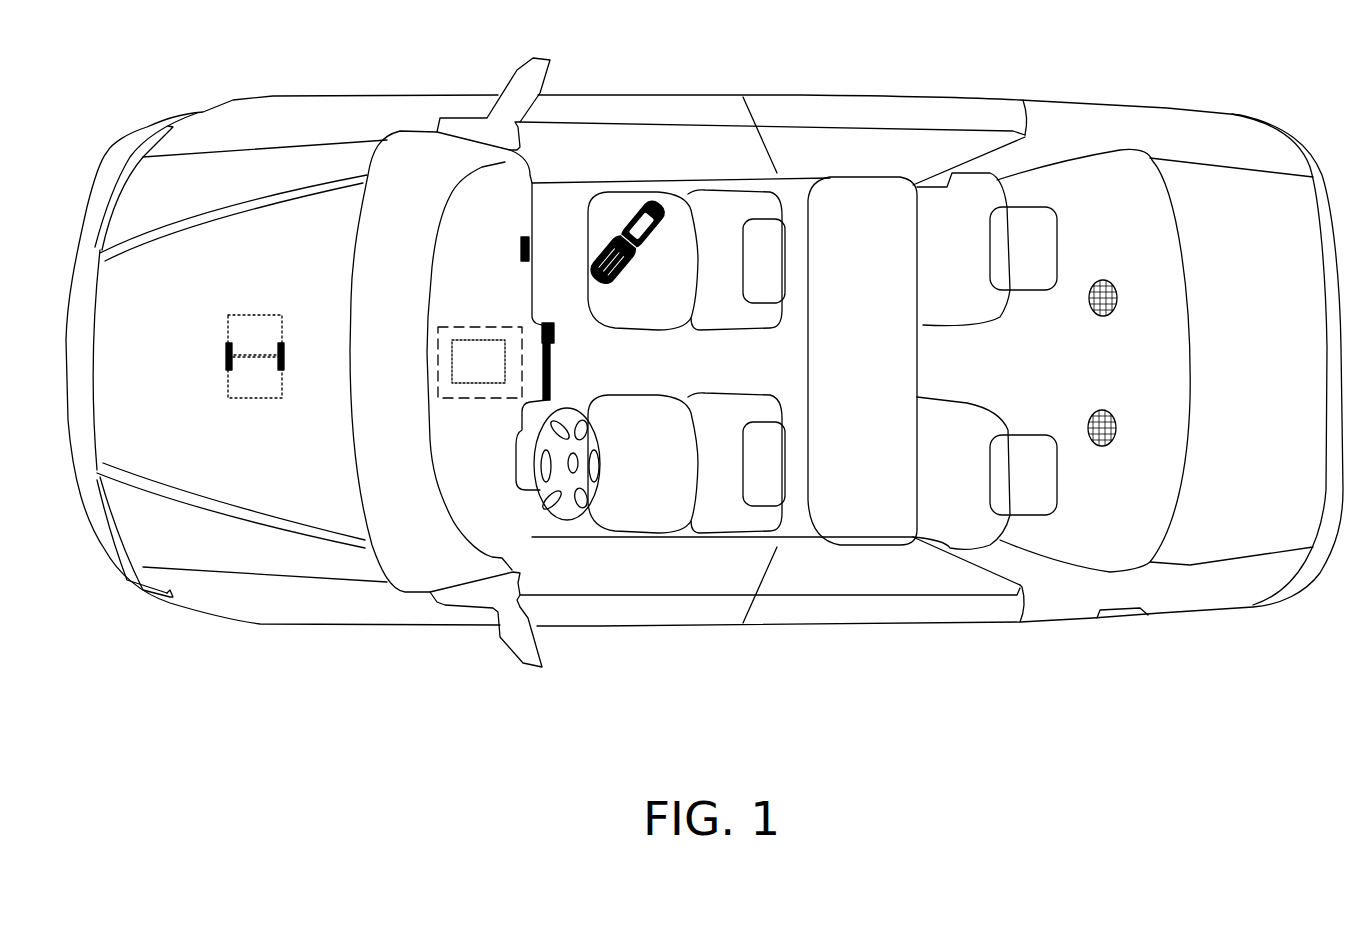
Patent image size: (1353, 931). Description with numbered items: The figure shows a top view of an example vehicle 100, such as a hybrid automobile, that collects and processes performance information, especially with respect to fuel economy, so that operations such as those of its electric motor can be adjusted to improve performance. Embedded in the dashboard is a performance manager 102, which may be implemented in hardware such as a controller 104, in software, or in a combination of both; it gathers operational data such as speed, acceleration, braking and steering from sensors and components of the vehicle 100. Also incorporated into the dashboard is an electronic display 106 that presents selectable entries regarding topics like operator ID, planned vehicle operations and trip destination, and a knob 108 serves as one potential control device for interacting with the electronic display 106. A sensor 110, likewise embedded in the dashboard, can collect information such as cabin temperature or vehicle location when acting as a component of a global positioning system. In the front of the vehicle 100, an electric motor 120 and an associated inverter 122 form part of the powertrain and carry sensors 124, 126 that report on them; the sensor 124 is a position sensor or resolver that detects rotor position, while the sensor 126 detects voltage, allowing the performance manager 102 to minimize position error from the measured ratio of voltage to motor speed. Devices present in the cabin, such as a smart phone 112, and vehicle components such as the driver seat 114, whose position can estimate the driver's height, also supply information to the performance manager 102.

The vehicle 100 is at (1097, 102).
The performance manager 102 is at (493, 372).
The controller 104 is at (473, 324).
The electronic display 106 is at (553, 360).
The knob 108 is at (557, 327).
The sensor 110 is at (520, 252).
The smart phone 112 is at (640, 248).
The driver seat 114 is at (700, 396).
The electric motor 120 is at (270, 345).
The inverter 122 is at (270, 388).
The sensor 124 is at (226, 357).
The sensor 126 is at (283, 345).